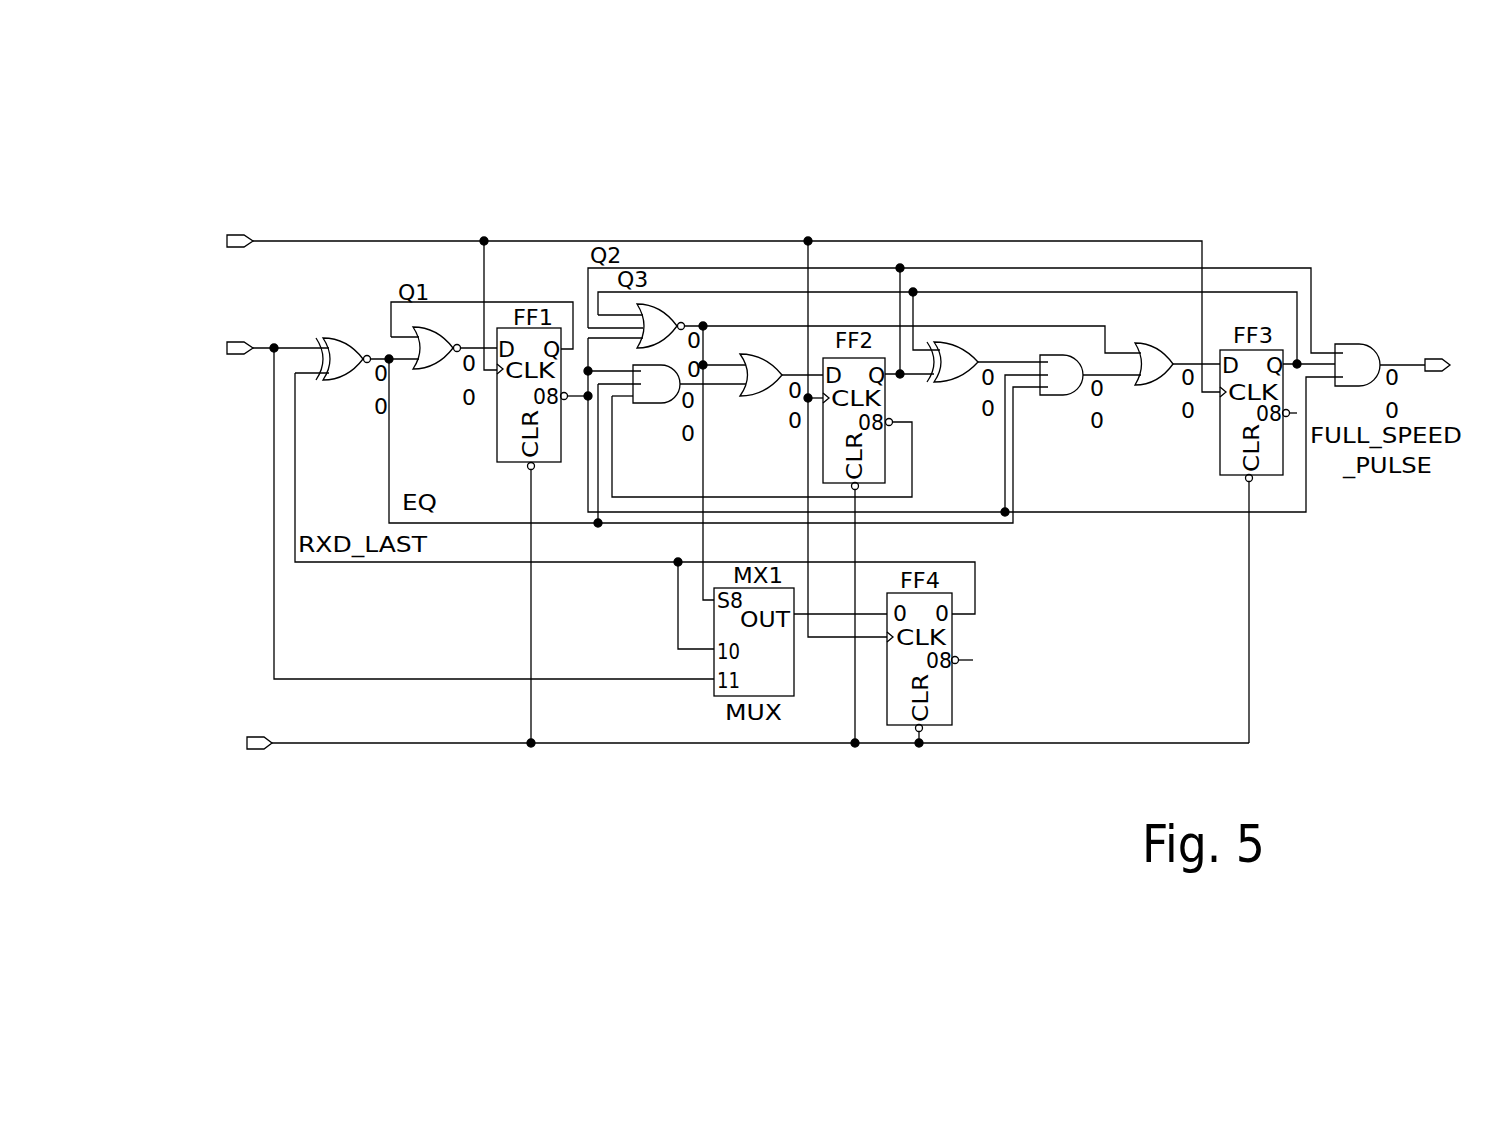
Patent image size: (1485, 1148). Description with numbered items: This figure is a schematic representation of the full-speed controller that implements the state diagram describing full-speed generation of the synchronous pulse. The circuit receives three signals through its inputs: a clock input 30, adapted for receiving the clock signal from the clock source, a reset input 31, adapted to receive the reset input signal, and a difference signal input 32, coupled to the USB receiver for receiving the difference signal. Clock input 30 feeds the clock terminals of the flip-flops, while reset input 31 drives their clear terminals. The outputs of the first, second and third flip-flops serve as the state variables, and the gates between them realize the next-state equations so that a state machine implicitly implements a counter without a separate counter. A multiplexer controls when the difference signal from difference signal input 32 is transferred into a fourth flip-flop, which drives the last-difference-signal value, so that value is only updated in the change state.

The clock input 30 is at (291, 240).
The reset input 31 is at (305, 743).
The difference signal input 32 is at (262, 344).